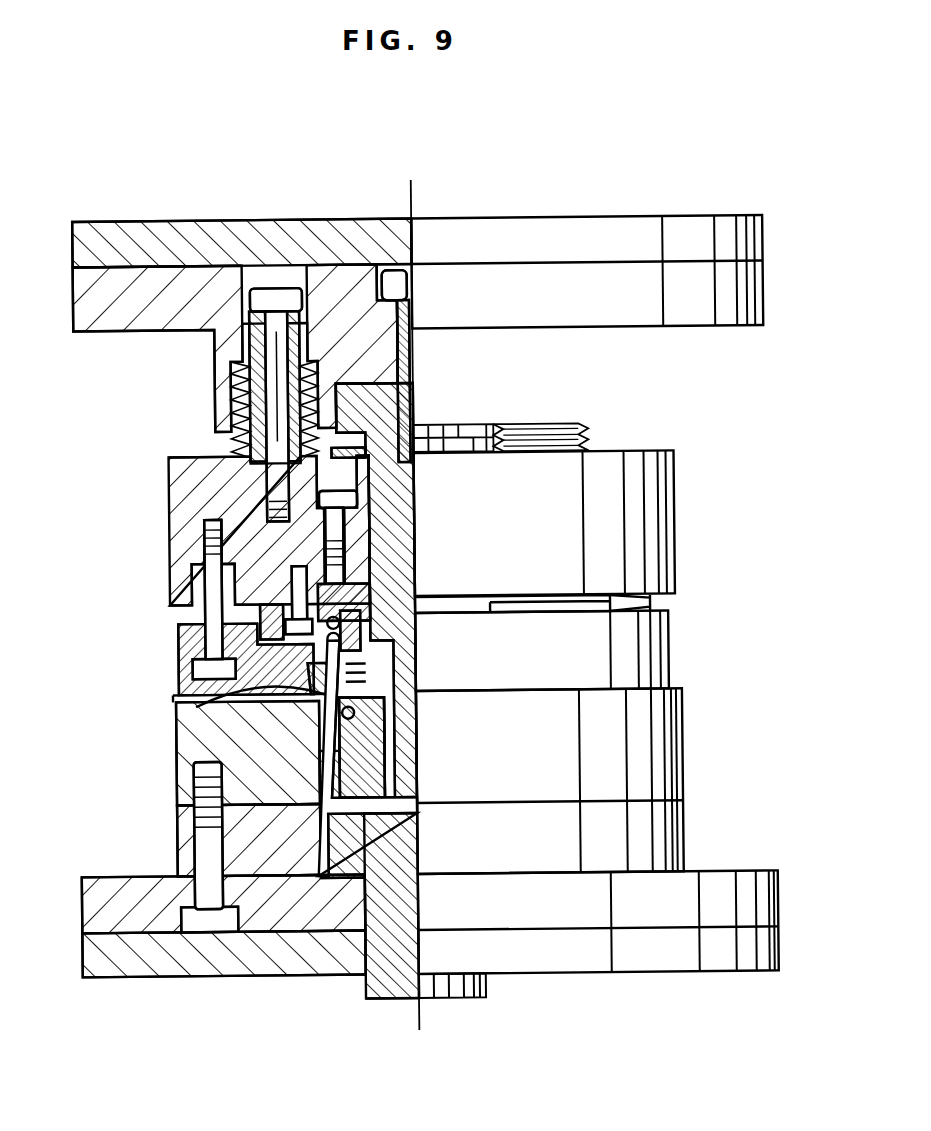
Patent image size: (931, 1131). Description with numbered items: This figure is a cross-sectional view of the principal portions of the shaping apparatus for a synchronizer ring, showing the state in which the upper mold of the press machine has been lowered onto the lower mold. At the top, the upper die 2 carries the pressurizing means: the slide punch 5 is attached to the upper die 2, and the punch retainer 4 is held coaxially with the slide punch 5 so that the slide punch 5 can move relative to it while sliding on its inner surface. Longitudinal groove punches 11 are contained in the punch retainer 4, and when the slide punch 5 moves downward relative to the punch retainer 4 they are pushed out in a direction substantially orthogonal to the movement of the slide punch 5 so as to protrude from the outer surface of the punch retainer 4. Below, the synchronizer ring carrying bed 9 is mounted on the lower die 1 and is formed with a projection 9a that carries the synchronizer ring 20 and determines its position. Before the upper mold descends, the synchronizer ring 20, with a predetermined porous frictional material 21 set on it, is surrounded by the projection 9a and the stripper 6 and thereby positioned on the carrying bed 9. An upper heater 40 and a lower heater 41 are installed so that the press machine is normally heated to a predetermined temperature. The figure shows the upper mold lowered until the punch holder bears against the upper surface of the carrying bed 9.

The lower die 1 is at (92, 917).
The upper die 2 is at (108, 328).
The punch retainer 4 is at (357, 592).
The slide punch 5 is at (400, 528).
The stripper 6 is at (178, 641).
The synchronizer ring carrying bed 9 is at (186, 737).
The projection 9a is at (180, 668).
The longitudinal groove punch 11 is at (362, 647).
The synchronizer ring 20 is at (200, 700).
The porous frictional material 21 is at (340, 668).
The upper heater 40 is at (749, 236).
The lower heater 41 is at (775, 950).